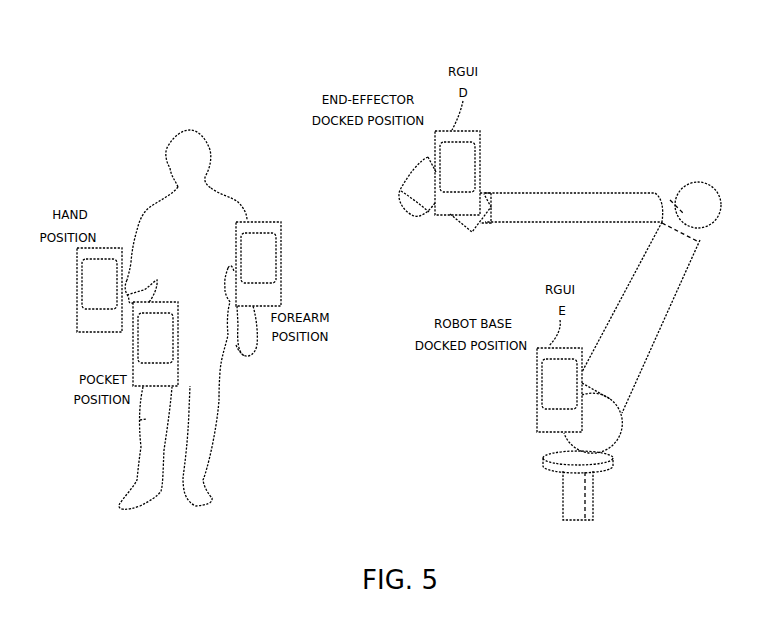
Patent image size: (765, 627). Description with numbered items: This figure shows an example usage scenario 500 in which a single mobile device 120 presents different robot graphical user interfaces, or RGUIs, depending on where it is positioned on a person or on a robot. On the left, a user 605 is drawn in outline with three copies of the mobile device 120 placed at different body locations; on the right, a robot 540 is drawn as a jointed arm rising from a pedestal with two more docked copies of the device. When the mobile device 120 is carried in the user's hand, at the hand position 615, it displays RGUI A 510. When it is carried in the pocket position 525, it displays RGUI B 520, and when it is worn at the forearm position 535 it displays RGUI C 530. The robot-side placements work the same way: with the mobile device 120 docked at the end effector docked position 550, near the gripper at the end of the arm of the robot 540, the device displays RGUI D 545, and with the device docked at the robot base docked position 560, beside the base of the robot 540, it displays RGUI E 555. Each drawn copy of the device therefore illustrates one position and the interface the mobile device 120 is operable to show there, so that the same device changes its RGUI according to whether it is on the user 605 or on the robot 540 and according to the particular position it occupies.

The example usage scenario 500 is at (90, 95).
The user 605 is at (190, 129).
The hand of user 615 is at (127, 256).
The RGUI A 510 is at (76, 287).
The RGUI B 520 is at (132, 343).
The pocket position 525 is at (138, 420).
The RGUI C 530 is at (282, 249).
The forearm position 535 is at (262, 343).
The RGUI D 545 is at (483, 170).
The end effector docked position 550 is at (408, 176).
The RGUI E 555 is at (537, 427).
The robot base docked position 560 is at (554, 440).
The robot 540 is at (628, 280).
The mobile device 120 is at (329, 286).